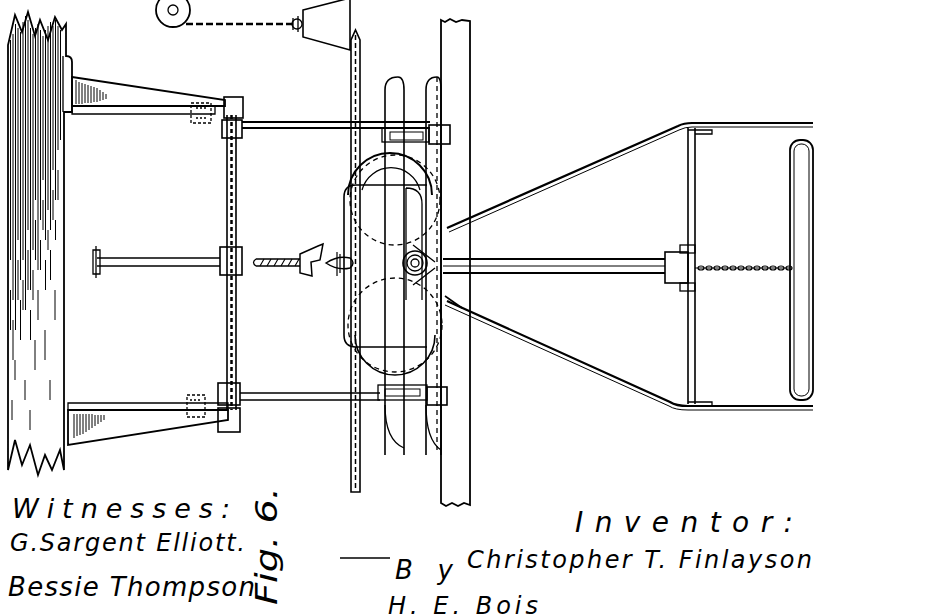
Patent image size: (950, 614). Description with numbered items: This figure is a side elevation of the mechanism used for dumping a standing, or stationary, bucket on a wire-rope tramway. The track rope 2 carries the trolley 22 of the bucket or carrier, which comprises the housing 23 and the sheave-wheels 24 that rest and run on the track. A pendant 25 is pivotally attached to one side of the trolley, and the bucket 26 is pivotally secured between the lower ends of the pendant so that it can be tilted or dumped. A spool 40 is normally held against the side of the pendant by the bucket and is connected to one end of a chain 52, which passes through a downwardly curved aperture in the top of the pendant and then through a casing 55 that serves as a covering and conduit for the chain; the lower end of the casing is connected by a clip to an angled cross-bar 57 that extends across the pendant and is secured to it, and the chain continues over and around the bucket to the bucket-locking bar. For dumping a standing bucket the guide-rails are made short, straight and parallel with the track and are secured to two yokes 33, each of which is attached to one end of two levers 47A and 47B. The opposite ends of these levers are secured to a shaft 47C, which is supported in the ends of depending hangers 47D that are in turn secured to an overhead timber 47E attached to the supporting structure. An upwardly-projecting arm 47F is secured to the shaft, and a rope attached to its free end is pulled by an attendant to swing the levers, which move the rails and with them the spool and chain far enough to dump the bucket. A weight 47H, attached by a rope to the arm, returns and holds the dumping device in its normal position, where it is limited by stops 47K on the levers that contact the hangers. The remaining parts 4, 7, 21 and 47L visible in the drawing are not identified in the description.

The track rope 2 is at (470, 86).
The pulley and drive rod 4 is at (242, 22).
The vertical bar 7 is at (352, 76).
The spindle 21 is at (338, 270).
The trolley 22 is at (345, 235).
The housing 23 is at (392, 267).
The sheave-wheels 24 is at (360, 178).
The pendant 25 is at (588, 160).
The bucket 26 is at (803, 233).
The double-track-supporting yoke 33 is at (452, 137).
The spool 40 is at (452, 280).
The lever 47A is at (310, 370).
The lever 47B is at (288, 122).
The shaft 47C is at (227, 182).
The depending hangers 47D is at (147, 104).
The overhead timber 47E is at (39, 243).
The upwardly-projecting arm 47F is at (138, 258).
The weight 47H is at (309, 250).
The stops 47K is at (195, 130).
The threaded rod 47L is at (265, 259).
The chain 52 is at (737, 267).
The casing 55 is at (580, 259).
The angled cross-bar 57 is at (690, 226).